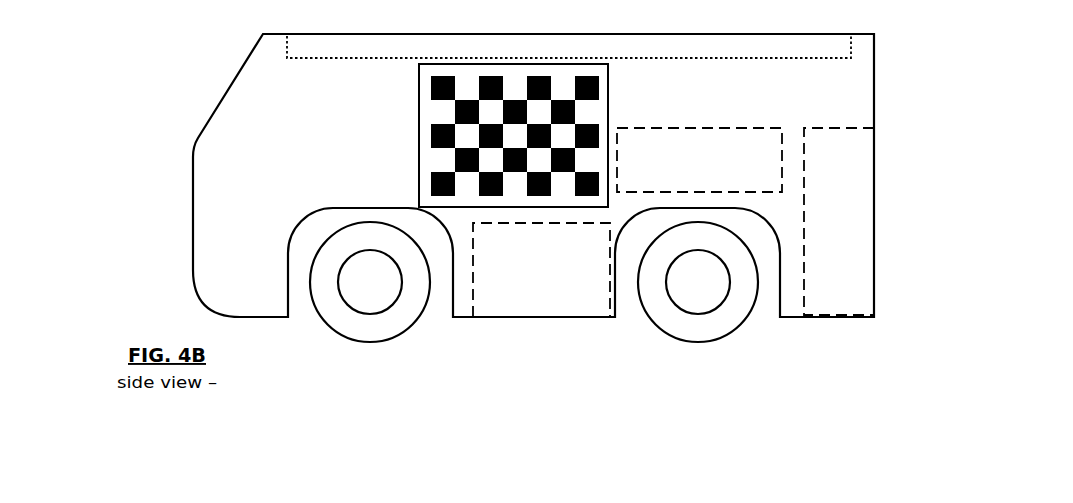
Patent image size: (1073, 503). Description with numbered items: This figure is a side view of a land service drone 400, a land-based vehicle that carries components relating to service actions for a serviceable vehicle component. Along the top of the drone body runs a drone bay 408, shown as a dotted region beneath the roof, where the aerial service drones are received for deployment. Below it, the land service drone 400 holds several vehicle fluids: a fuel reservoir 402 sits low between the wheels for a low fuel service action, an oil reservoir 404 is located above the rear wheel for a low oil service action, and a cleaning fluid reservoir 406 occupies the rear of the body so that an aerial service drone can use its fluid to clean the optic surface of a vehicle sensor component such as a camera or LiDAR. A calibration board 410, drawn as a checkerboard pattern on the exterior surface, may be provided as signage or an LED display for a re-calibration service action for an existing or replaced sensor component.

The land service drone 400 is at (469, 225).
The fuel reservoir 402 is at (541, 270).
The oil reservoir 404 is at (699, 160).
The cleaning fluid reservoir 406 is at (880, 197).
The drone bay 408 is at (698, 30).
The calibration board 410 is at (414, 123).